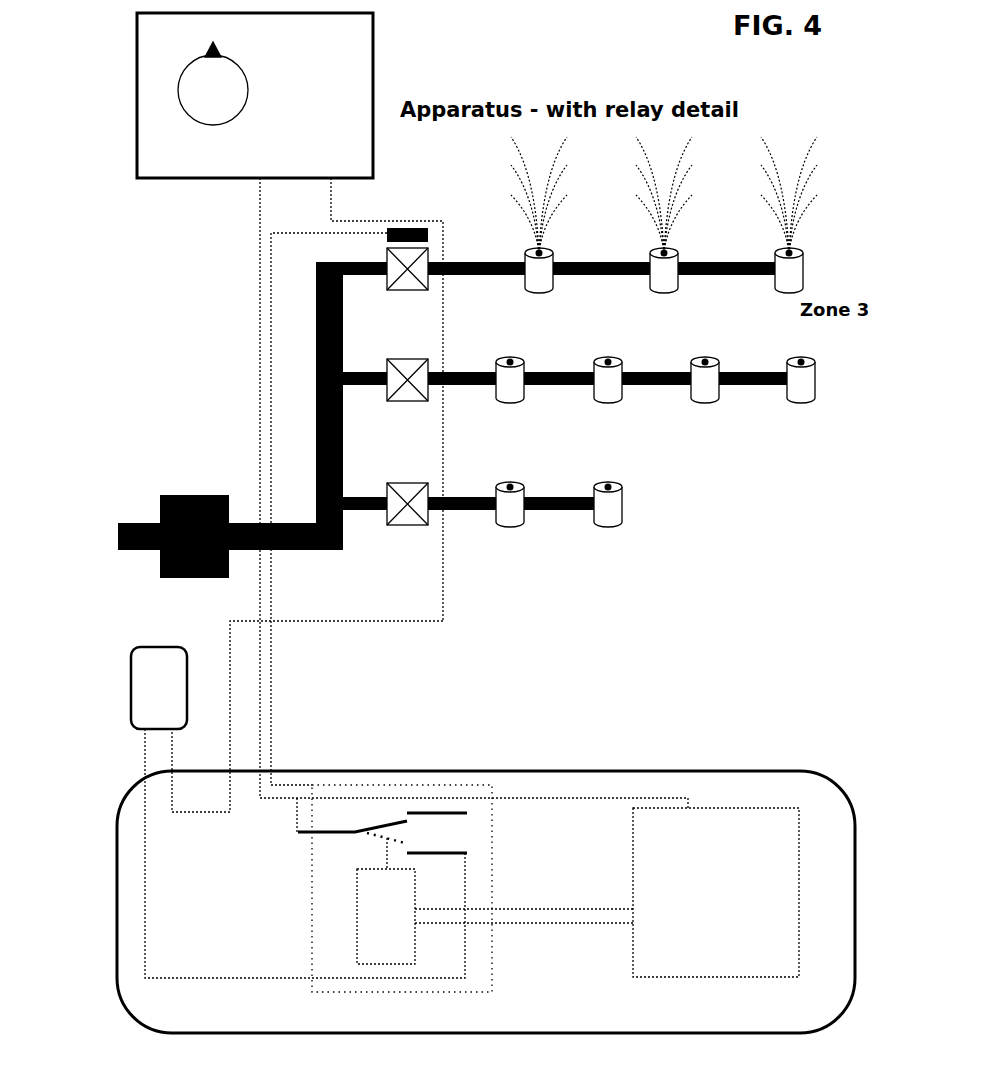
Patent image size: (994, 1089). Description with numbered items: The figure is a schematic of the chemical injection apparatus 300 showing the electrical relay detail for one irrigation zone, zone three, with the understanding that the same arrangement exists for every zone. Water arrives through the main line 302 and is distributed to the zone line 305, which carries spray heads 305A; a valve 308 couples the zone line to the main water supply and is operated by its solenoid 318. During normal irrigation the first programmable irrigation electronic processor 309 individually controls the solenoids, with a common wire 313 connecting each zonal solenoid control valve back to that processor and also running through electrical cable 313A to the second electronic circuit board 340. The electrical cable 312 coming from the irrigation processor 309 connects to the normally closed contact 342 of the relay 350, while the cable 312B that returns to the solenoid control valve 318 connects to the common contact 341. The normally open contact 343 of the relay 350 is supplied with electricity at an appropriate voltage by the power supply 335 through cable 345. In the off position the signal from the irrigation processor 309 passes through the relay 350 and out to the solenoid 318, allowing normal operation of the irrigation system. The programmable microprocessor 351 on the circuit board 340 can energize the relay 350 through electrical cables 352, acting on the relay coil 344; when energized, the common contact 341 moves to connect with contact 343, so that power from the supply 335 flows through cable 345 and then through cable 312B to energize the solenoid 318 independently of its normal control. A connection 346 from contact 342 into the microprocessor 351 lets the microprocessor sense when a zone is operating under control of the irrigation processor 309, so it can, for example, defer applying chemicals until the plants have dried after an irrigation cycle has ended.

The chemical injection apparatus 300 is at (799, 82).
The main line 302 is at (144, 522).
The zone line 305 is at (617, 276).
The spray heads 305A is at (545, 251).
The valve 308 is at (417, 291).
The first programmable irrigation electronic processor 309 is at (374, 79).
The electrical cable 312 is at (402, 489).
The cable 312B is at (272, 731).
The common wire 313 is at (330, 177).
The electrical cable 313A is at (446, 608).
The solenoid 318 is at (417, 227).
The power supply 335 is at (147, 645).
The second electronic circuit board 340 is at (783, 771).
The common contact 341 is at (354, 833).
The normally closed contact 342 is at (422, 811).
The normally open contact 343 is at (471, 851).
The relay coil 344 is at (355, 910).
The cable 345 is at (212, 976).
The connection 346 is at (690, 796).
The relay 350 is at (495, 866).
The programmable microprocessor 351 is at (716, 892).
The electrical cables 352 is at (537, 904).